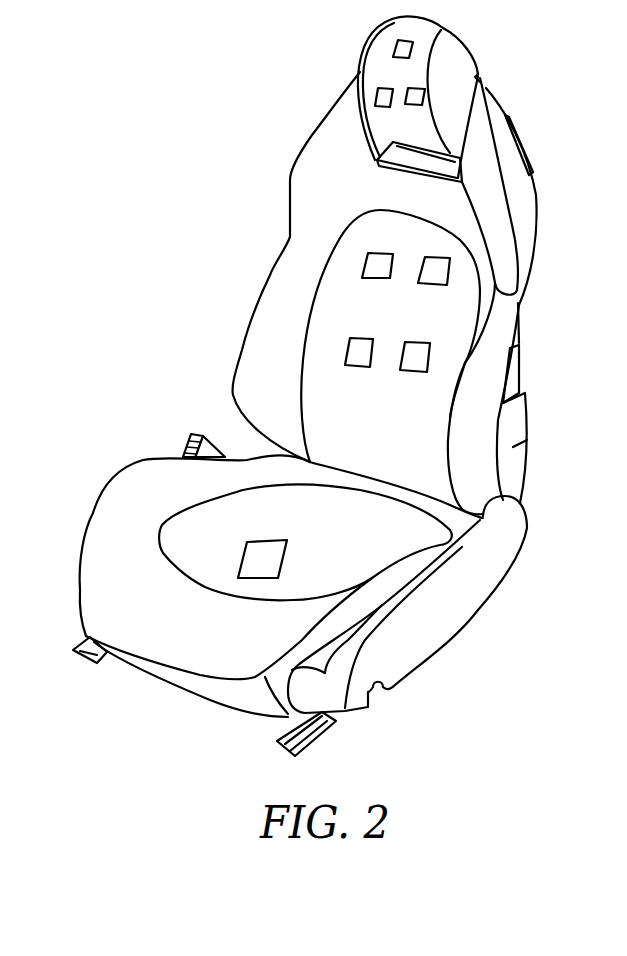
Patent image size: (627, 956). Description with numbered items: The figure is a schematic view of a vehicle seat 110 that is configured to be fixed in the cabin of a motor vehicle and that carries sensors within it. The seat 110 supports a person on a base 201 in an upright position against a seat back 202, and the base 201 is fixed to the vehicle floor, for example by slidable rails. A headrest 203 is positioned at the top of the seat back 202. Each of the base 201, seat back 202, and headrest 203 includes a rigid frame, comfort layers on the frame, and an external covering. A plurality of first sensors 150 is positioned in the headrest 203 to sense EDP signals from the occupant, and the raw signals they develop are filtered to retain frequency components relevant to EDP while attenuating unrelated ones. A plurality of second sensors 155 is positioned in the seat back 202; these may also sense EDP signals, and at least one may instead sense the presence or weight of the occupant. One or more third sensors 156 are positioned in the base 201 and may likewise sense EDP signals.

The vehicle seat 110 is at (163, 183).
The first sensors 150 is at (393, 46).
The second sensors 155 is at (432, 278).
The third sensors 156 is at (253, 550).
The base 201 is at (413, 663).
The seat back 202 is at (527, 235).
The headrest 203 is at (477, 55).